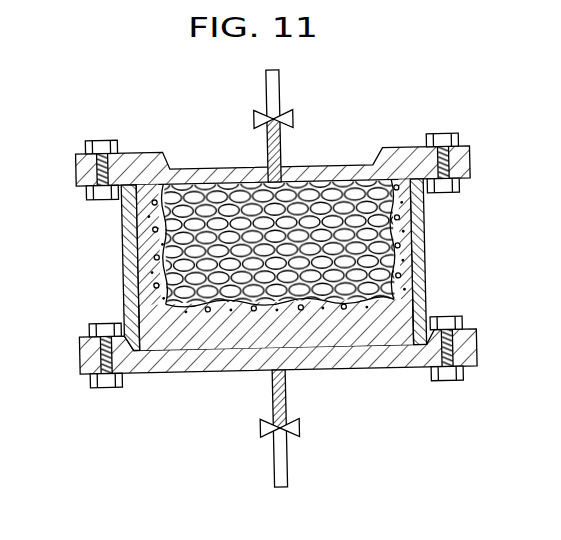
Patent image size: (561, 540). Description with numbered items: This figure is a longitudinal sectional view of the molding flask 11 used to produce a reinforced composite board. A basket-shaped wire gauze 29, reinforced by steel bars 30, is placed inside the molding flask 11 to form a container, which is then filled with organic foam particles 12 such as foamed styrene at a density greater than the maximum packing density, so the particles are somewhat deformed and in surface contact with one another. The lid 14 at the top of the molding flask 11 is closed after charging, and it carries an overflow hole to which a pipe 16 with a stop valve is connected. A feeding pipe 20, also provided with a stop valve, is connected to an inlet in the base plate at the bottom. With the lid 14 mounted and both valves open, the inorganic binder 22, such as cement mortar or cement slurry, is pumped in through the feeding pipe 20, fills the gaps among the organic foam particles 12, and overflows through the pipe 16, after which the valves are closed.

The molding flask 11 is at (132, 292).
The organic foam particles 12 is at (158, 268).
The lid 14 is at (322, 178).
The pipe 16 is at (272, 150).
The pipe for feeding the inorganic binder 20 is at (278, 395).
The inorganic binder 22 is at (350, 325).
The basket-shaped wire gauze 29 is at (405, 258).
The steel bars 30 is at (401, 200).